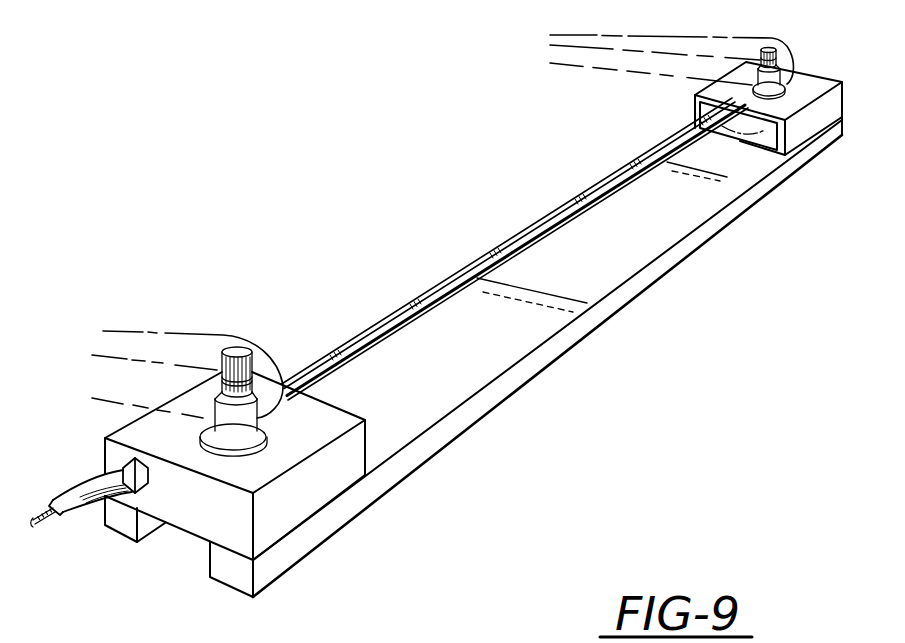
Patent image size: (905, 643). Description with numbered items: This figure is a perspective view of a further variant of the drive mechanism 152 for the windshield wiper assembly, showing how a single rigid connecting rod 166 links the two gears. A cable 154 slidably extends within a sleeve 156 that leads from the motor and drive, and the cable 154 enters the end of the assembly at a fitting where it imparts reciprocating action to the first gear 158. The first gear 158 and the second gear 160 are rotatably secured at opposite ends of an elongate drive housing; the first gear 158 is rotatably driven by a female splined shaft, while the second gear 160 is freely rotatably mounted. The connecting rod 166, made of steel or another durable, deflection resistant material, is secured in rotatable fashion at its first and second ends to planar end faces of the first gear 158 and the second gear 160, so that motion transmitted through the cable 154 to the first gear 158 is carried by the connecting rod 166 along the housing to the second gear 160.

The drive mechanism 152 is at (309, 297).
The cable 154 is at (52, 520).
The sleeve 156 is at (88, 483).
The first gear 158 is at (318, 492).
The second gear 160 is at (684, 117).
The connecting rod 166 is at (407, 318).